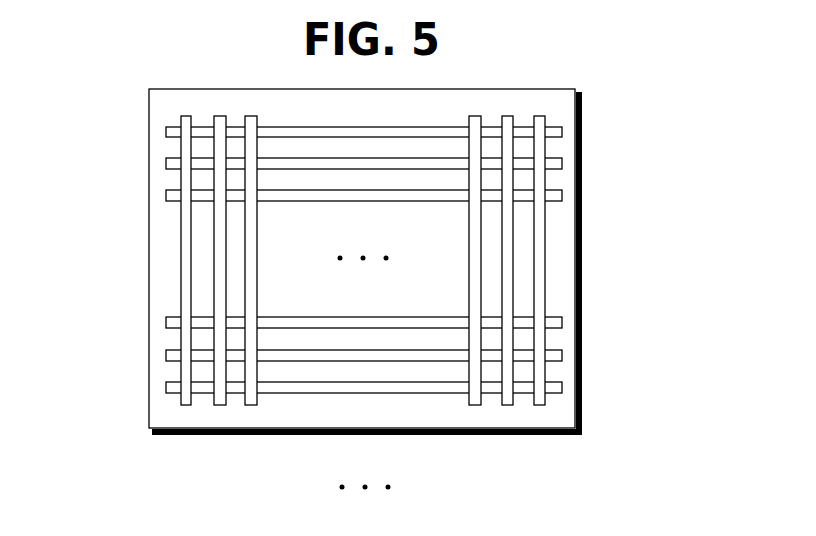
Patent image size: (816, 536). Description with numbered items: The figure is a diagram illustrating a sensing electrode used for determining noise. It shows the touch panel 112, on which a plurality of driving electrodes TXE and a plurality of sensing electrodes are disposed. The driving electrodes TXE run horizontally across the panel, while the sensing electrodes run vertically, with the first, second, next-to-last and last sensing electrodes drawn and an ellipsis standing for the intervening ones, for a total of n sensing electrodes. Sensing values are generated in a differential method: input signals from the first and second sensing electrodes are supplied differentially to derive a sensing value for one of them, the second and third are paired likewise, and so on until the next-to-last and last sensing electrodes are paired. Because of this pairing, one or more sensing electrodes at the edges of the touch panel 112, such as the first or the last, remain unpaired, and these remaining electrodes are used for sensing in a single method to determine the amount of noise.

The touch panel 112 is at (582, 245).
The driving electrodes TXE is at (562, 386).